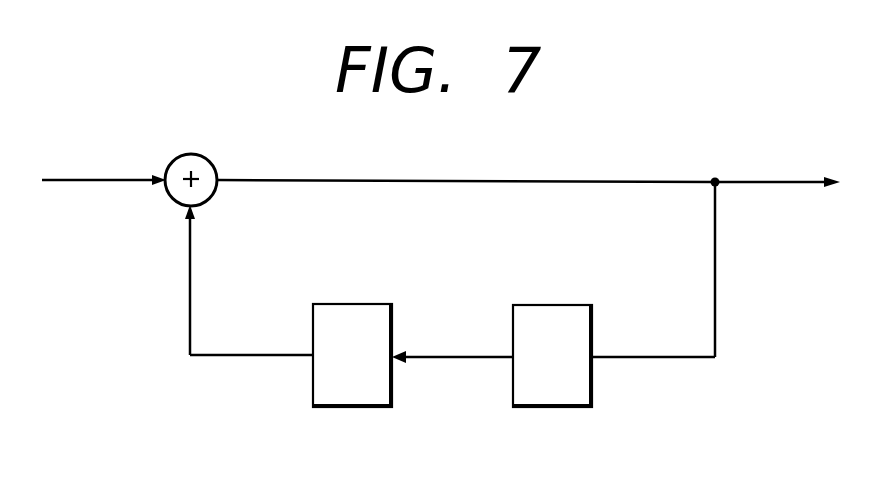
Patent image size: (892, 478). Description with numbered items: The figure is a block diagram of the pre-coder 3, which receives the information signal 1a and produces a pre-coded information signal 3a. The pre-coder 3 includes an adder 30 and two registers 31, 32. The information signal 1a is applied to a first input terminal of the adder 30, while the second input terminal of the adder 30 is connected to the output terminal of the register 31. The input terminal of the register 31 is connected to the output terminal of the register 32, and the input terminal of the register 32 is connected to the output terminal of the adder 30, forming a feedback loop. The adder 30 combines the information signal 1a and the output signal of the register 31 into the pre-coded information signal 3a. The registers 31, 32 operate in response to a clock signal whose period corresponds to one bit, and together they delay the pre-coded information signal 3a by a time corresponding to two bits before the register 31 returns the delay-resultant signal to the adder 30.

The pre-coder 3 is at (137, 107).
The information signal 1a is at (90, 174).
The pre-coded information signal 3a is at (772, 178).
The adder 30 is at (210, 158).
The register 31 is at (370, 302).
The register 32 is at (570, 303).